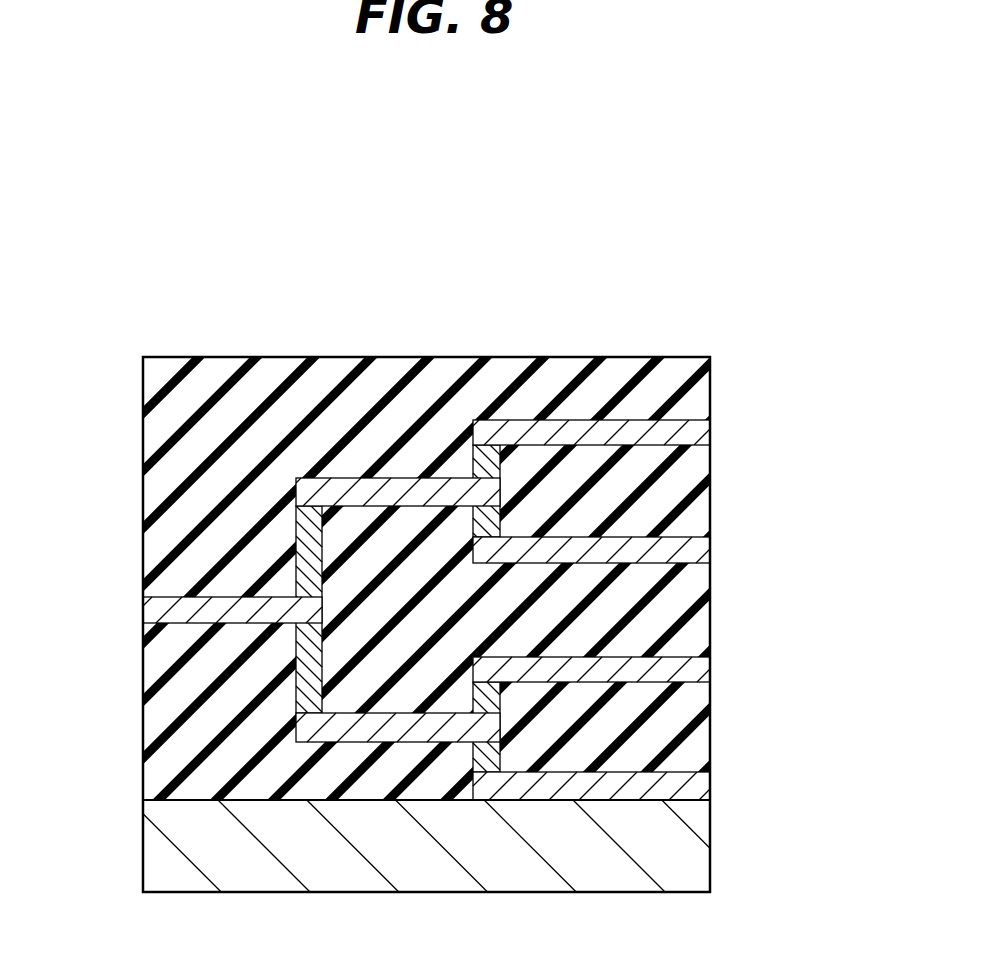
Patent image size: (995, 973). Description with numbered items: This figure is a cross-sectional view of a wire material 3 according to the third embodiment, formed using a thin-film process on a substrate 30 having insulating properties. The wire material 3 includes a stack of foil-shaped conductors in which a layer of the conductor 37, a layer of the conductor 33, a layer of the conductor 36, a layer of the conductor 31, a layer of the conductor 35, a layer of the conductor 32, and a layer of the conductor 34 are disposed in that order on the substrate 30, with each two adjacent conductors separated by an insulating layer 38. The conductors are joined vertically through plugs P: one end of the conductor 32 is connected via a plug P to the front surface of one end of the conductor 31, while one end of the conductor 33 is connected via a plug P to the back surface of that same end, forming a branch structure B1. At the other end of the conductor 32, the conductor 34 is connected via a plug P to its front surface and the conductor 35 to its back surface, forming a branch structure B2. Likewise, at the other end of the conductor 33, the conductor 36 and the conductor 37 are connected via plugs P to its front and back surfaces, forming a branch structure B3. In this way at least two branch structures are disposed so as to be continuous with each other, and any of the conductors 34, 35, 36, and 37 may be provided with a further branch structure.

The wire material 3 is at (463, 166).
The substrate 30 is at (692, 855).
The conductor 31 is at (158, 613).
The conductor 32 is at (382, 490).
The conductor 33 is at (370, 730).
The conductor 34 is at (696, 433).
The conductor 35 is at (694, 553).
The conductor 36 is at (697, 664).
The conductor 37 is at (696, 783).
The insulating layer 38 is at (678, 368).
The plug P is at (503, 515).
The branch structure B1 is at (282, 647).
The branch structure B2 is at (550, 488).
The branch structure B3 is at (513, 742).